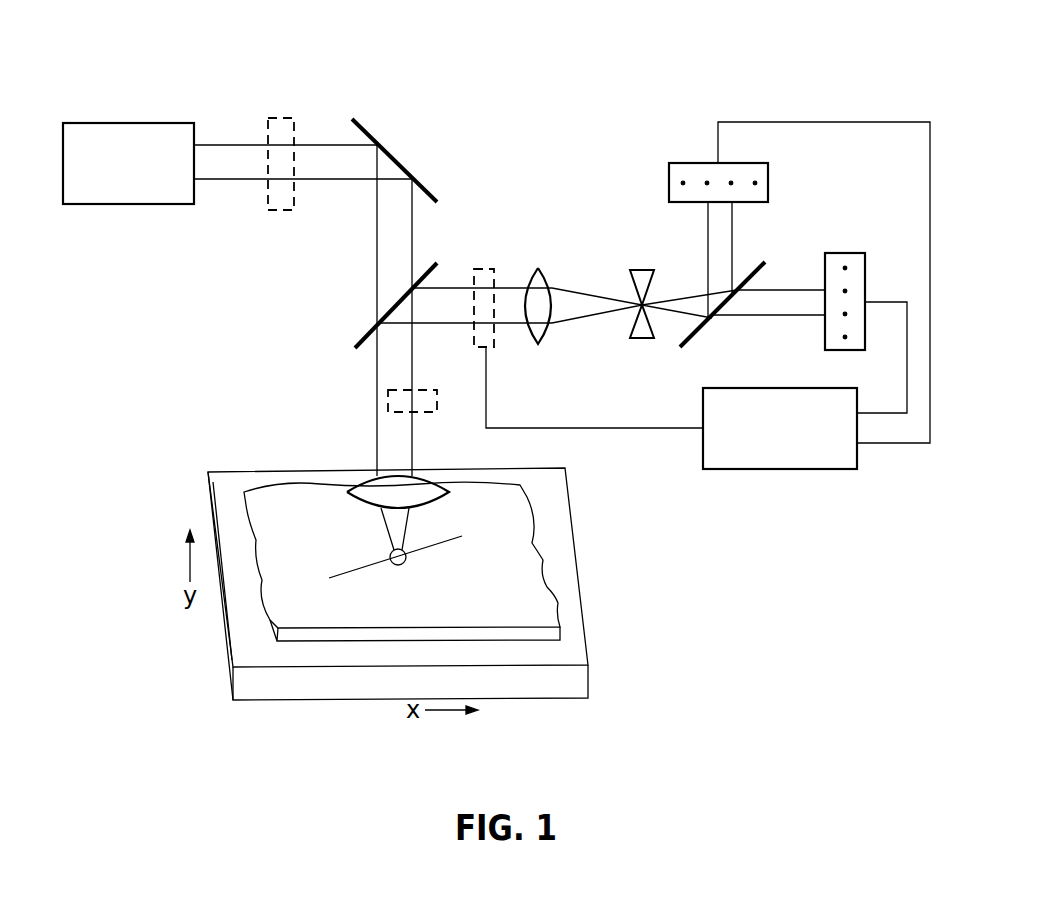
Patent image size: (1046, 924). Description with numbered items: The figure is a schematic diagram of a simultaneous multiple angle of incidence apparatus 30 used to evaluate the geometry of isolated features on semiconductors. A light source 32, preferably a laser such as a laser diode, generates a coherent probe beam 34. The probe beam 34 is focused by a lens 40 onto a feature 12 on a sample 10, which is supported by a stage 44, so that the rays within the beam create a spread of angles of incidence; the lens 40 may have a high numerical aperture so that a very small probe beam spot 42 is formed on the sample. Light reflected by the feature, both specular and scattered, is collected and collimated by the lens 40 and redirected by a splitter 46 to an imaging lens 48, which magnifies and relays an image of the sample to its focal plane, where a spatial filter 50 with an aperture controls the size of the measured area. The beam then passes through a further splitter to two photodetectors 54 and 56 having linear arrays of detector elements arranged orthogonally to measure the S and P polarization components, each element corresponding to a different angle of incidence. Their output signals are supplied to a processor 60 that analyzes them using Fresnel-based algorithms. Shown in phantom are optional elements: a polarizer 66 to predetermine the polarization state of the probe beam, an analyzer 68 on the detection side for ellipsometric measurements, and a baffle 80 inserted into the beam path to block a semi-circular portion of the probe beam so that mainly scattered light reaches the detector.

The sample 10 is at (312, 624).
The feature 12 is at (447, 538).
The simultaneous multiple angle of incidence apparatus 30 is at (578, 82).
The light source 32 is at (110, 123).
The probe beam 34 is at (343, 145).
The lens 40 is at (367, 480).
The probe beam spot 42 is at (404, 563).
The stage 44 is at (565, 543).
The splitter 46 is at (365, 338).
The imaging lens 48 is at (546, 272).
The spatial filter 50 is at (641, 270).
The photodetector 54 is at (846, 253).
The photodetector 56 is at (770, 178).
The processor 60 is at (780, 469).
The polarizer 66 is at (281, 118).
The analyzer 68 is at (483, 269).
The baffle 80 is at (437, 402).